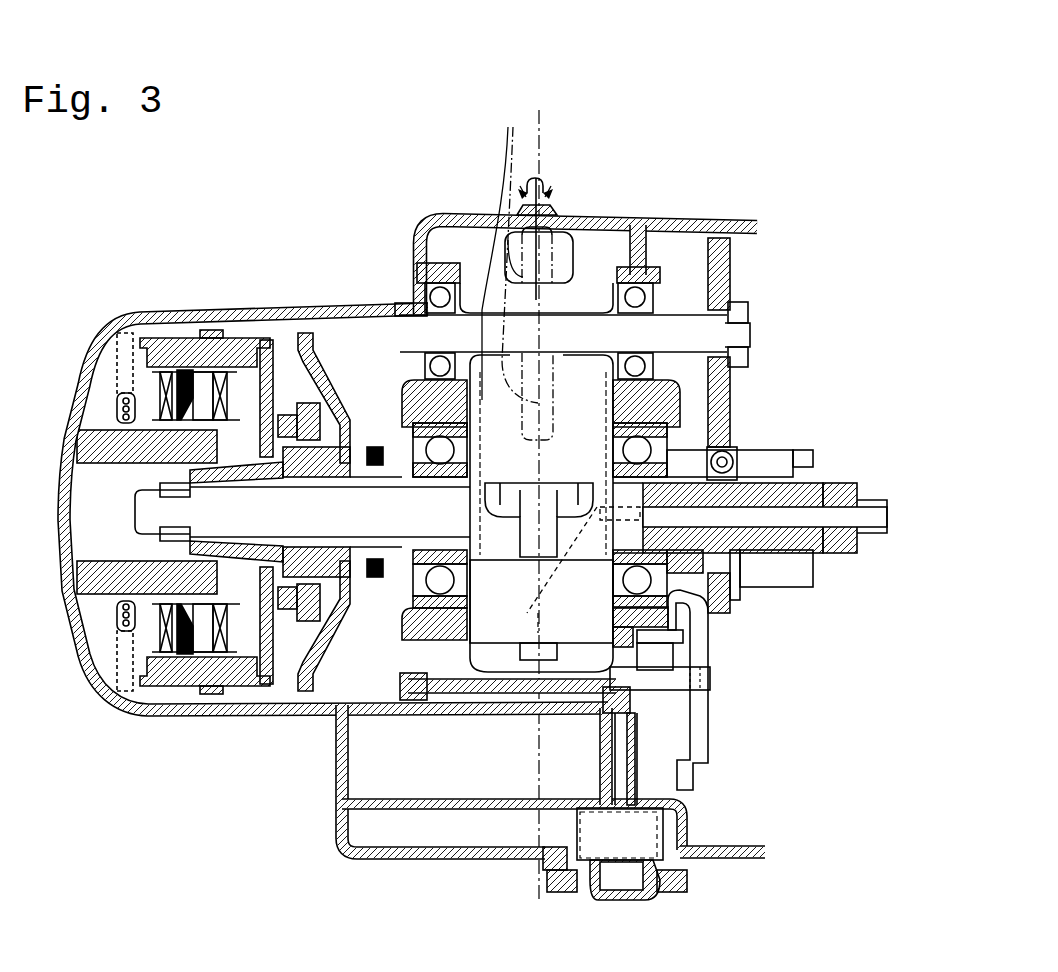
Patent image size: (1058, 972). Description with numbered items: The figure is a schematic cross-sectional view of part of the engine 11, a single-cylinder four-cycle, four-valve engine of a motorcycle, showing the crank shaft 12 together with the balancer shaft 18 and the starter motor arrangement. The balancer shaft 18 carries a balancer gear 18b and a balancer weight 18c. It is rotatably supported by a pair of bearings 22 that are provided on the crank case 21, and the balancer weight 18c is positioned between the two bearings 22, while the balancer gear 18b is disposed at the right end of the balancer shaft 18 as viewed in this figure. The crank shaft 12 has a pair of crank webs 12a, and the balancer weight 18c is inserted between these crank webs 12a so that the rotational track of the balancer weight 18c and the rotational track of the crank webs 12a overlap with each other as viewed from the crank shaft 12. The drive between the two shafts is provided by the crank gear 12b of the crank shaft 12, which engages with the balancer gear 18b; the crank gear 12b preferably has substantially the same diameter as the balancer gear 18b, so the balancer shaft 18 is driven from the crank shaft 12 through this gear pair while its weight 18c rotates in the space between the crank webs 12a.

The engine 11 is at (792, 244).
The crank shaft 12 is at (775, 543).
The crank webs 12a is at (477, 310).
The crank gear 12b is at (735, 440).
The balancer shaft 18 is at (583, 327).
The balancer gear 18b is at (732, 266).
The balancer weight 18c is at (512, 251).
The crank case 21 is at (536, 178).
The bearings 22 is at (432, 245).